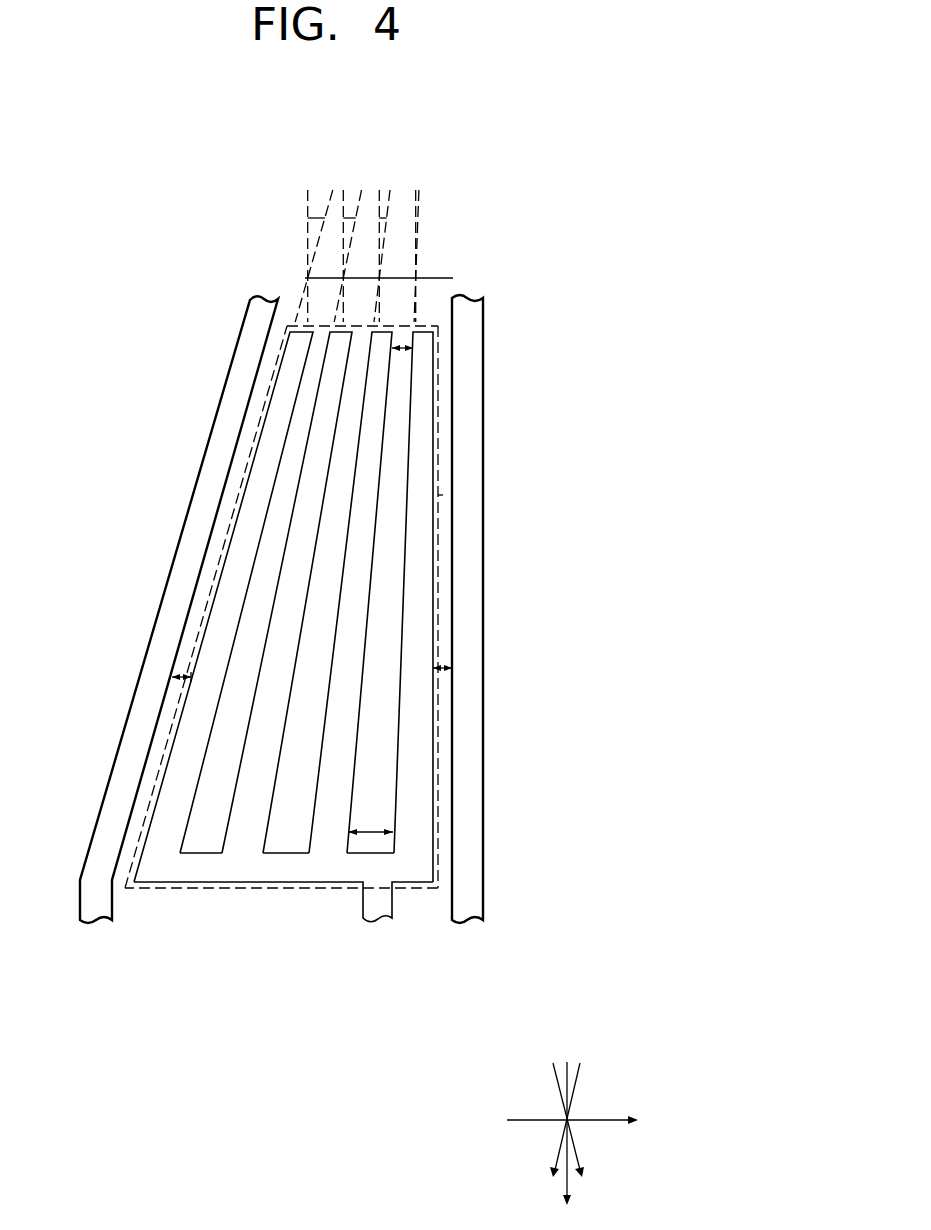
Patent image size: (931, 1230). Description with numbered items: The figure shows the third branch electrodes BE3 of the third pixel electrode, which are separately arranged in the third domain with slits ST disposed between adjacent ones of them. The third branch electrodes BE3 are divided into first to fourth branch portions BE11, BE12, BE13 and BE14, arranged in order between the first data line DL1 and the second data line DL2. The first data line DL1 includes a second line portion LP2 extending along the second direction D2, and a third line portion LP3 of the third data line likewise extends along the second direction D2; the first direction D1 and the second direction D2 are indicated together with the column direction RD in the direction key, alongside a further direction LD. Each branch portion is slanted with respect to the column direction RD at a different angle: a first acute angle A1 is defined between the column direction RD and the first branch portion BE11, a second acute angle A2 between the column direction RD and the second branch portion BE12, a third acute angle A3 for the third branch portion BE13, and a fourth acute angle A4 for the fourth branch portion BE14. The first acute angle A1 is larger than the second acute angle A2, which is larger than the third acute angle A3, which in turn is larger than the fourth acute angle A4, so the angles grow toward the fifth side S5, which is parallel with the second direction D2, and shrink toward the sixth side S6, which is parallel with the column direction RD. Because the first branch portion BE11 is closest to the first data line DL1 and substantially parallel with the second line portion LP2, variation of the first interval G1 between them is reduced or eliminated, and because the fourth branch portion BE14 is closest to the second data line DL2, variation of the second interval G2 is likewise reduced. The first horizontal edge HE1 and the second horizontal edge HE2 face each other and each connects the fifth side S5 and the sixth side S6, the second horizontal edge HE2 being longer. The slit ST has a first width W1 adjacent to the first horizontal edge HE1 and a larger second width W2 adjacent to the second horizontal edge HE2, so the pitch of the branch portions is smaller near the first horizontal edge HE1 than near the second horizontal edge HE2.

The first acute angle A1 is at (316, 217).
The second acute angle A2 is at (349, 217).
The third acute angle A3 is at (383, 217).
The fourth acute angle A4 is at (416, 205).
The first horizontal edge HE1 is at (436, 326).
The second horizontal edge HE2 is at (146, 890).
The fifth side S5 is at (228, 528).
The sixth side S6 is at (441, 495).
The slit ST is at (340, 461).
The first width W1 is at (402, 352).
The second width W2 is at (370, 828).
The first interval G1 is at (181, 675).
The second interval G2 is at (442, 666).
The second line portion LP2 is at (175, 601).
The third line portion LP3 is at (470, 592).
The first data line DL1 is at (167, 652).
The second data line DL2 is at (502, 651).
The third branch electrodes BE3 is at (290, 690).
The first branch portion BE11 is at (180, 783).
The second branch portion BE12 is at (255, 783).
The third branch portion BE13 is at (330, 783).
The fourth branch portion BE14 is at (420, 670).
The lateral direction LD is at (587, 1122).
The column direction RD is at (568, 1187).
The first direction D1 is at (580, 1155).
The second direction D2 is at (555, 1157).